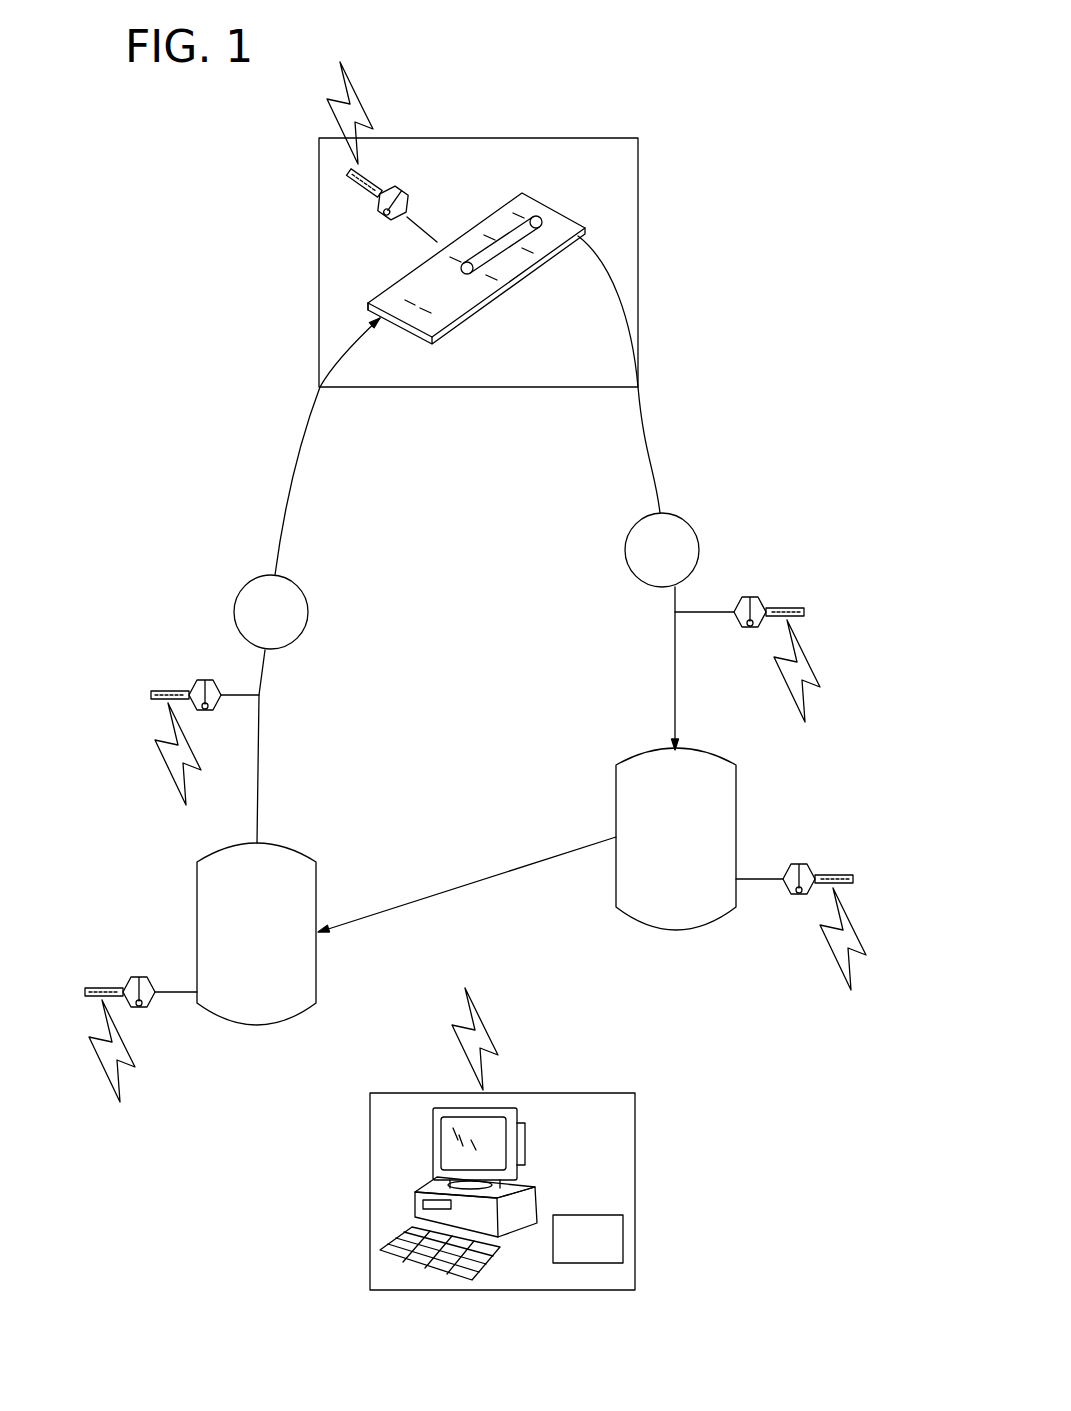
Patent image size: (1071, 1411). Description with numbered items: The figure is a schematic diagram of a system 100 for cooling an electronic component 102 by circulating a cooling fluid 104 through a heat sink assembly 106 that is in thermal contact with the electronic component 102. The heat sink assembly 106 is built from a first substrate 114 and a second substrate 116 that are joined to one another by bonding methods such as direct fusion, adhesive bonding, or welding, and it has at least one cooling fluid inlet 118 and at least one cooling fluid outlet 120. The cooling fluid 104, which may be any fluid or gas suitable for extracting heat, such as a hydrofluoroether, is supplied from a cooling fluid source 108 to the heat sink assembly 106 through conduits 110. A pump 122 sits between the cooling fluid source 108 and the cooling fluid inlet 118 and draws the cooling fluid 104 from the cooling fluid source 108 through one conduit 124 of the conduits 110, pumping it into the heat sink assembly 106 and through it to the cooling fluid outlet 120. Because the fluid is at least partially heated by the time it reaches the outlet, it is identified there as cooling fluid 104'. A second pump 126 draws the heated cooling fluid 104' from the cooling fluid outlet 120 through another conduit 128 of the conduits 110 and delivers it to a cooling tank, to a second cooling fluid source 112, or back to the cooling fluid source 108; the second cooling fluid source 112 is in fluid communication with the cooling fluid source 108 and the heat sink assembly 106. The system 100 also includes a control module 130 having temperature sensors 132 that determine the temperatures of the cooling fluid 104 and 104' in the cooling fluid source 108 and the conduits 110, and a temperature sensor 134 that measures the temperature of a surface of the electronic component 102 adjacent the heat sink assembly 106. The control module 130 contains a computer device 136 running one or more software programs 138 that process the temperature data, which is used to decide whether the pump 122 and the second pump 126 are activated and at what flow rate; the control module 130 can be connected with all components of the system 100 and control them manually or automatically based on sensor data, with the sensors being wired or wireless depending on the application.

The system 100 is at (646, 92).
The electronic component 102 is at (485, 176).
The cooling fluid 104 is at (263, 446).
The cooling fluid 104' is at (691, 374).
The heat sink assembly 106 is at (437, 355).
The cooling fluid source 108 is at (238, 922).
The conduits 110 is at (455, 890).
The second cooling fluid source 112 is at (659, 849).
The first substrate 114 is at (480, 306).
The second substrate 116 is at (368, 302).
The cooling fluid inlet 118 is at (390, 320).
The cooling fluid outlet 120 is at (537, 214).
The pump 122 is at (254, 626).
The conduit 124 is at (260, 745).
The second pump 126 is at (645, 564).
The conduit 128 is at (675, 652).
The control module 130 is at (568, 1132).
The temperature sensors 132 is at (447, 790).
The temperature sensor 134 is at (388, 201).
The computer device 136 is at (415, 1192).
The software programs 138 is at (570, 1254).